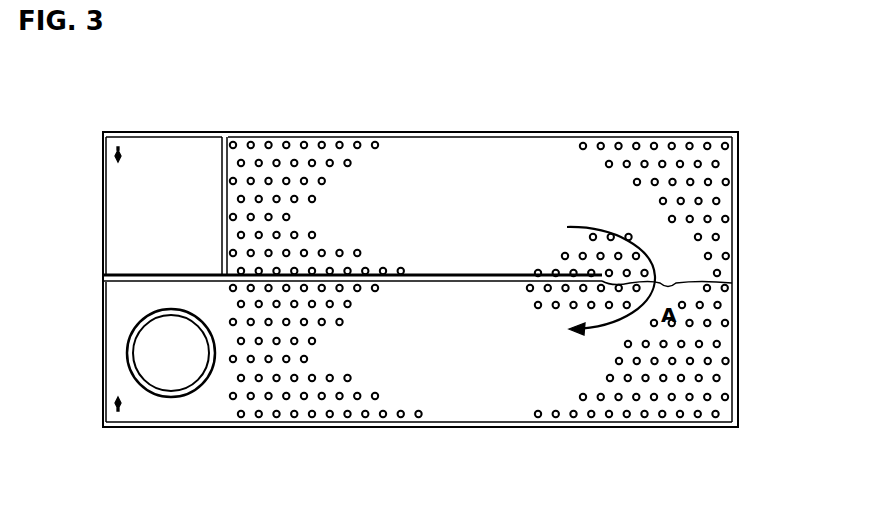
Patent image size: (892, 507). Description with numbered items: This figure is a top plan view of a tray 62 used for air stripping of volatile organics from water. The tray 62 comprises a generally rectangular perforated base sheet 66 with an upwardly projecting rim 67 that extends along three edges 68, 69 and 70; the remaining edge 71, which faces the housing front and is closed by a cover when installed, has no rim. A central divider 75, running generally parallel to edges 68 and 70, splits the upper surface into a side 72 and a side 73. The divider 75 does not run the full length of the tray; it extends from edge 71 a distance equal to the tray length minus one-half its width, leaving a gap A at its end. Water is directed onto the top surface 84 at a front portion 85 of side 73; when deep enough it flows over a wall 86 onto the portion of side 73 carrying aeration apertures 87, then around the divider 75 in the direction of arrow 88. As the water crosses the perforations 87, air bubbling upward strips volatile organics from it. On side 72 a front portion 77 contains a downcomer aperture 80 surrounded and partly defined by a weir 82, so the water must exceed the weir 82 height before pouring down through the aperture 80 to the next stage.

The tray 62 is at (632, 122).
The perforated base sheet 66 is at (550, 162).
The rim 67 is at (738, 226).
The edge 68 is at (355, 158).
The edge 69 is at (740, 313).
The edge 70 is at (548, 428).
The edge 71 is at (103, 220).
The side 72 is at (474, 408).
The side 73 is at (503, 160).
The central divider 75 is at (445, 276).
The front portion 77 is at (115, 300).
The downcomer aperture 80 is at (168, 391).
The weir 82 is at (171, 311).
The top surface 84 is at (432, 160).
The front portion 85 is at (177, 152).
The wall 86 is at (221, 152).
The aeration apertures 87 is at (288, 162).
The arrow 88 is at (593, 236).